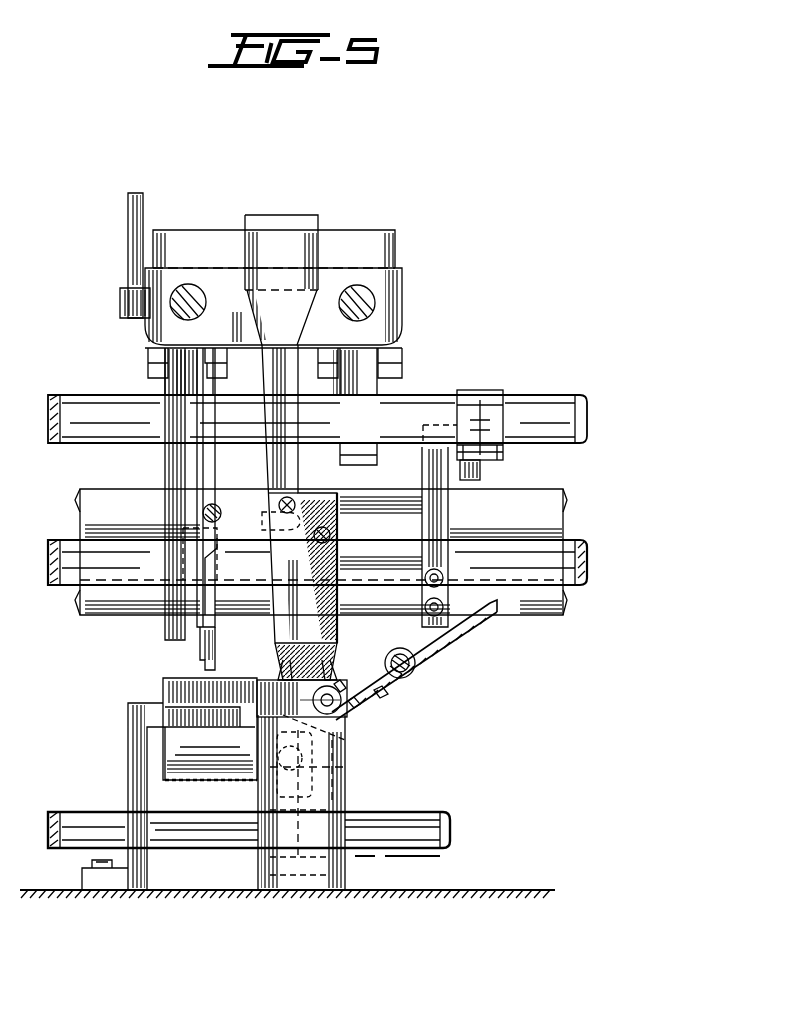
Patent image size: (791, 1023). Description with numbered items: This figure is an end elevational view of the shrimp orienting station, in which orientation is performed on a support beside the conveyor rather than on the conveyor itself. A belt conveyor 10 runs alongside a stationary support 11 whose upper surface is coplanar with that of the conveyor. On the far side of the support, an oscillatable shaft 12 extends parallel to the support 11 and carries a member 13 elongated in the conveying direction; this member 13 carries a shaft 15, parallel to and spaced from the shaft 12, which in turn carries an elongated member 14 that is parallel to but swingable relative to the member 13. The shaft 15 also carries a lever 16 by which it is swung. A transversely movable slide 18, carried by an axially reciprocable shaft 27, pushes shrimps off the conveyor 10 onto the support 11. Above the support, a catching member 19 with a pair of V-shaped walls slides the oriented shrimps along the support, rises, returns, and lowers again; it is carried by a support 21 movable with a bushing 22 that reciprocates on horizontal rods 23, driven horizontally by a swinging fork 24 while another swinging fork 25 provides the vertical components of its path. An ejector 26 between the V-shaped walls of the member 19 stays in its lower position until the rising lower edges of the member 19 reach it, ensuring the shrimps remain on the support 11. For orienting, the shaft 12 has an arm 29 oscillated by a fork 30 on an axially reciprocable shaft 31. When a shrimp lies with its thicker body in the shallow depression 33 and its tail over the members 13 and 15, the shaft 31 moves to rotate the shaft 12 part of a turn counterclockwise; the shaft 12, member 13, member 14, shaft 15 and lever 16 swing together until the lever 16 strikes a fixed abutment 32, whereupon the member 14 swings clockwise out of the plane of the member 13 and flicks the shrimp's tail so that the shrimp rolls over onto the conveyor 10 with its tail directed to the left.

The belt conveyor 10 is at (204, 782).
The stationary support 11 is at (268, 692).
The oscillatable shaft 12 is at (342, 712).
The member 13 is at (358, 704).
The elongated member 14 is at (386, 692).
The shaft 15 is at (412, 672).
The lever 16 is at (444, 650).
The transversely movable slide 18 is at (200, 670).
The catching member 19 is at (279, 675).
The support 21 is at (165, 468).
The bushing 22 is at (384, 337).
The horizontal rods 23 is at (182, 252).
The swinging fork 24 is at (128, 250).
The swinging fork 25 is at (480, 472).
The ejector 26 is at (306, 553).
The axially reciprocable shaft 27 is at (72, 548).
The arm 29 is at (345, 737).
The fork 30 is at (347, 767).
The axially reciprocable shaft 31 is at (373, 836).
The fixed abutment 32 is at (270, 517).
The shallow depression 33 is at (340, 682).